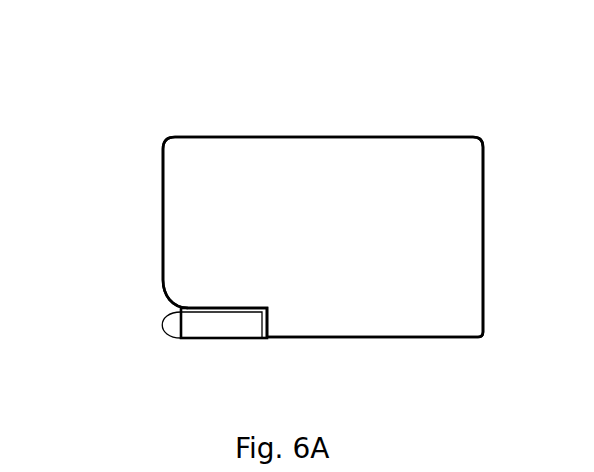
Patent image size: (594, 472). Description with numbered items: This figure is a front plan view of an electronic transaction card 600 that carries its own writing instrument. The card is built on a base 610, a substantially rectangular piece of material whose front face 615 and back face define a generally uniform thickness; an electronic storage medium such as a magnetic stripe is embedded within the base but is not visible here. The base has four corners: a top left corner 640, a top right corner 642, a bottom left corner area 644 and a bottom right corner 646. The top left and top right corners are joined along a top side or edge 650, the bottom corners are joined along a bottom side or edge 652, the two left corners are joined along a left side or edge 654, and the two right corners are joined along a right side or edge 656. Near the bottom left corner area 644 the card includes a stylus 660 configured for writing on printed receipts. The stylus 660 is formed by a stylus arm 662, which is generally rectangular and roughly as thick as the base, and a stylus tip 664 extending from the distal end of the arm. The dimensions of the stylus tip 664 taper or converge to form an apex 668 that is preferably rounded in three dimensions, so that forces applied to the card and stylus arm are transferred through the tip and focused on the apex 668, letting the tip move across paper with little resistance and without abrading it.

The electronic transaction card 600 is at (378, 75).
The base 610 is at (430, 157).
The front face 615 is at (351, 210).
The top left corner 640 is at (163, 140).
The top right corner 642 is at (482, 138).
The bottom left corner area 644 is at (197, 305).
The bottom right corner 646 is at (485, 337).
The top side or edge 650 is at (279, 138).
The bottom side or edge 652 is at (395, 338).
The left side or edge 654 is at (163, 213).
The right side or edge 656 is at (485, 224).
The stylus 660 is at (207, 334).
The stylus arm 662 is at (238, 327).
The stylus tip 664 is at (175, 316).
The apex 668 is at (165, 327).